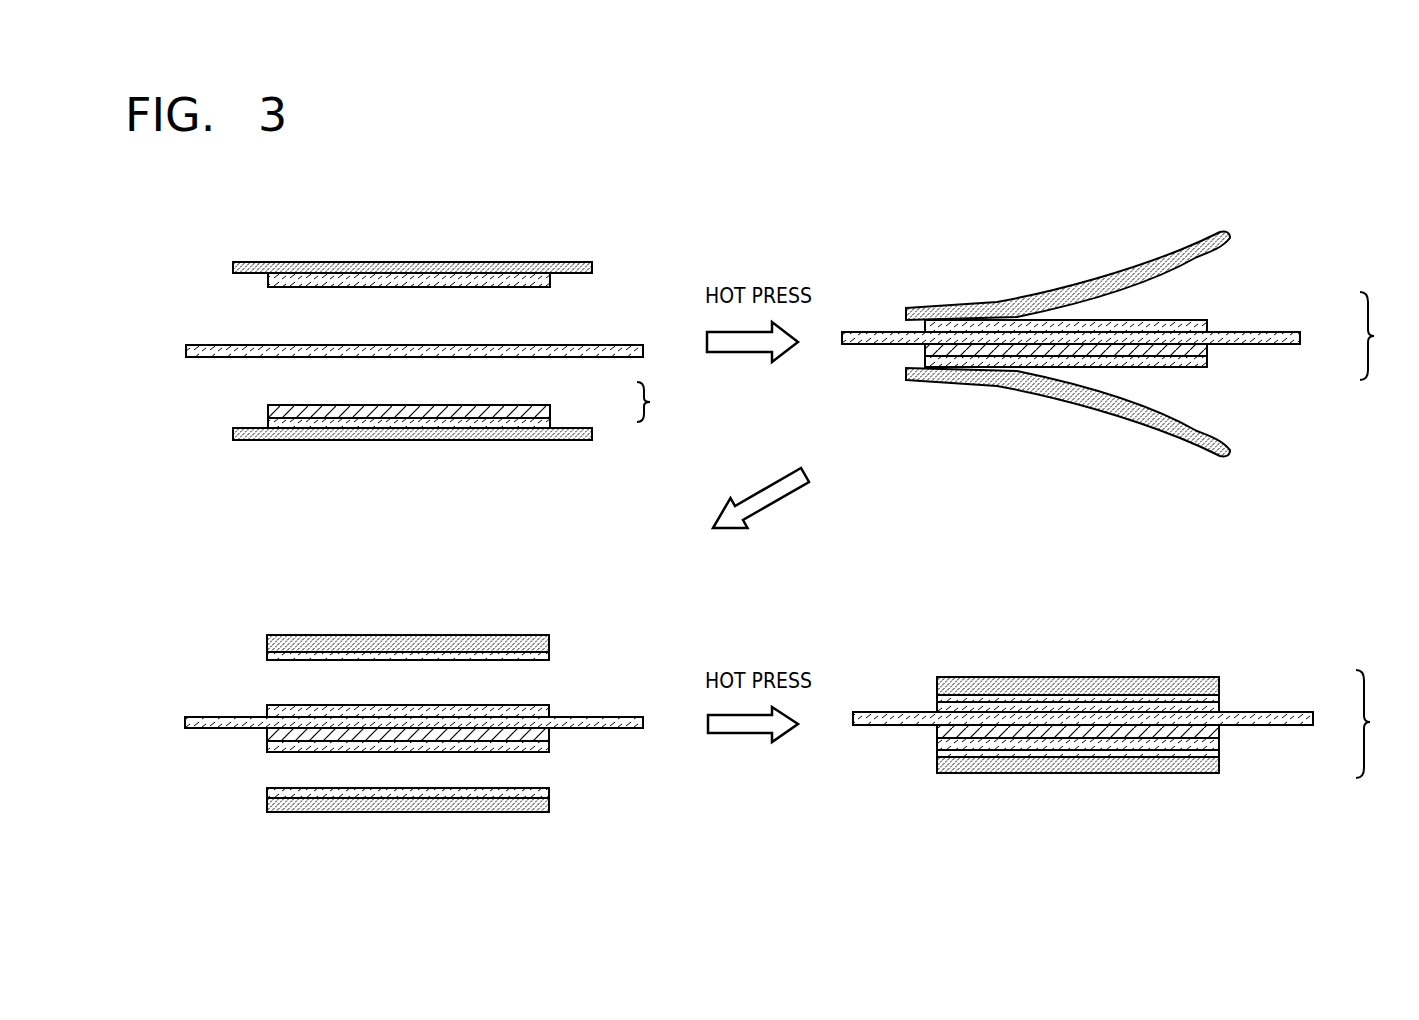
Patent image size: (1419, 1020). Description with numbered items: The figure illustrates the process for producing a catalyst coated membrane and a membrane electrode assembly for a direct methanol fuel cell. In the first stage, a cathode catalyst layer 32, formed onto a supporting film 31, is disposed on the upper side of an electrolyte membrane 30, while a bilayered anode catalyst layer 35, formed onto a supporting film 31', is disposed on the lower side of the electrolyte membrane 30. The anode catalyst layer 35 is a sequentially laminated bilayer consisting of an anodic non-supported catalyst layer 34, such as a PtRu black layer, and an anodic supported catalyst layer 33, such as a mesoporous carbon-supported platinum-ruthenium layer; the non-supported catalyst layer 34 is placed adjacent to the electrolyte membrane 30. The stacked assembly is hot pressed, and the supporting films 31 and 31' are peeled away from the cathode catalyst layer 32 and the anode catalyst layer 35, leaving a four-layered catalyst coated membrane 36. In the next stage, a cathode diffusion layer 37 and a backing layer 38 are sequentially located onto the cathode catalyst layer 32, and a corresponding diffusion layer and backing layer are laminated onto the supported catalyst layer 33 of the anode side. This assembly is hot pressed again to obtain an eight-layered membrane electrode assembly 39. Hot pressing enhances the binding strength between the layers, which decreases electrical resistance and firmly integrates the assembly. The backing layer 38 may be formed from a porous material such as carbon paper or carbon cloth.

The electrolyte membrane 30 is at (620, 345).
The supporting film 31 is at (731, 264).
The supporting film 31' is at (731, 430).
The cathode catalyst layer 32 is at (548, 278).
The anodic supported catalyst layer 33 is at (550, 425).
The anodic non-supported catalyst layer 34 is at (548, 409).
The anode catalyst layer 35 is at (659, 402).
The catalyst coated membrane 36 is at (1383, 336).
The cathode diffusion layer 37 is at (548, 655).
The backing layer 38 is at (548, 636).
The membrane electrode assembly 39 is at (1381, 724).